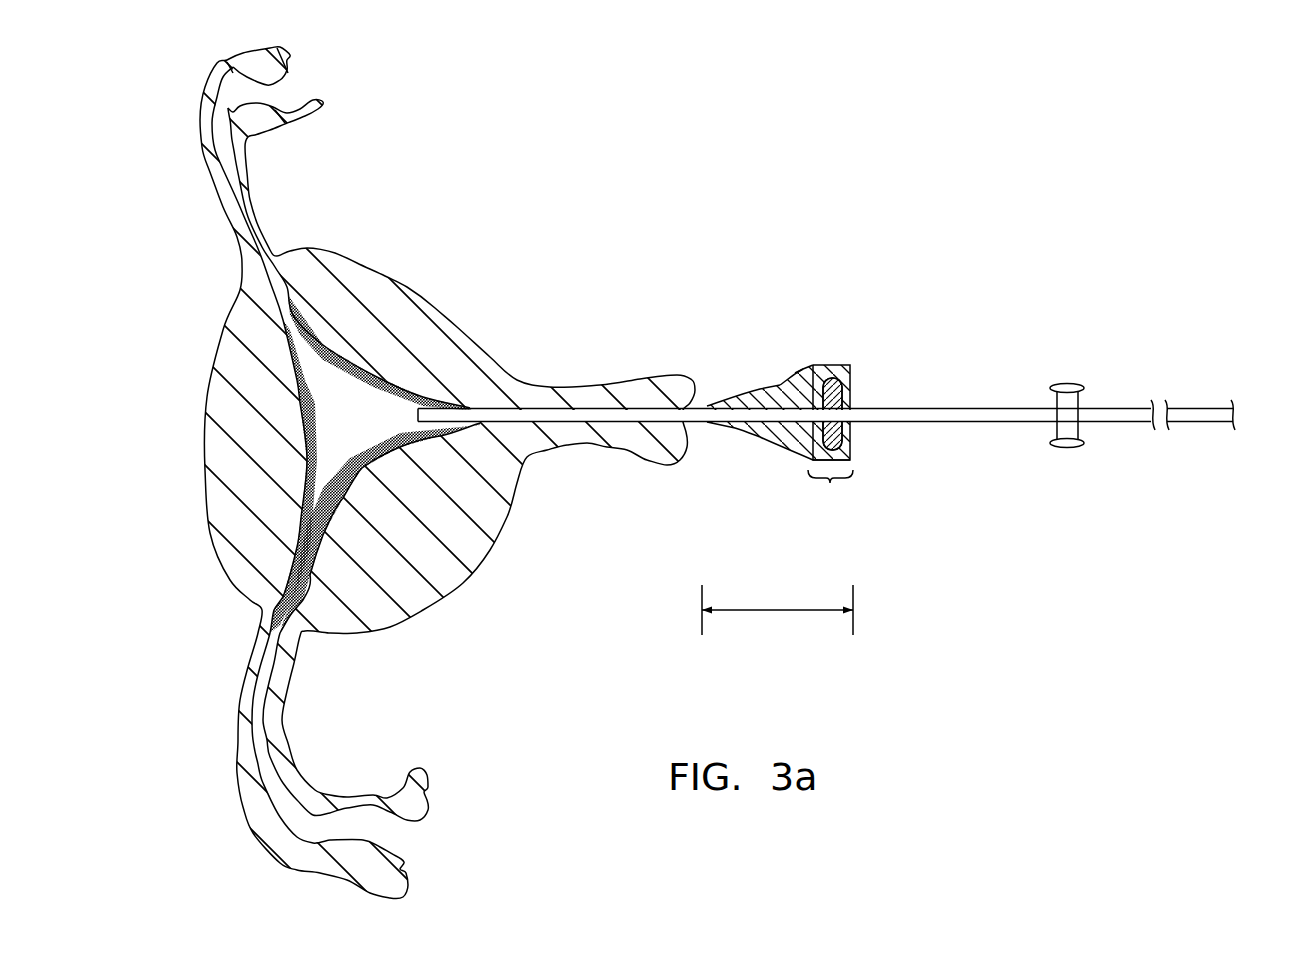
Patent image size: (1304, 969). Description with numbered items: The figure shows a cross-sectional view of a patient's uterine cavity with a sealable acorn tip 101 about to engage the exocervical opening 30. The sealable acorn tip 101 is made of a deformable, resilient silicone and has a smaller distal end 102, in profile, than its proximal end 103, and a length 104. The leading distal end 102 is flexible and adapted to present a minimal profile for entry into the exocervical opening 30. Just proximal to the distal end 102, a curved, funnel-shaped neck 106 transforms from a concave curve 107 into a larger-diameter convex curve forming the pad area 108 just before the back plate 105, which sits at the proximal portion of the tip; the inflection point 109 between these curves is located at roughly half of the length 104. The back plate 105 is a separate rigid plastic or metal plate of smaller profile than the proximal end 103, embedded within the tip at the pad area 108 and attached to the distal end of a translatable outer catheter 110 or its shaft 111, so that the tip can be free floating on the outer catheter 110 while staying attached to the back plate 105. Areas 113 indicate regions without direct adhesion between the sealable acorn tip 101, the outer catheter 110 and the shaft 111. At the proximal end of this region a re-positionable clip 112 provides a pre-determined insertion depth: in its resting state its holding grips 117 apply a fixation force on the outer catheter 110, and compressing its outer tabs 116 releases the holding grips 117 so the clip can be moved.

The exocervical opening 30 is at (703, 440).
The sealable acorn tip 101 is at (835, 430).
The distal end 102 is at (707, 408).
The proximal end 103 is at (852, 376).
The length 104 is at (777, 613).
The back plate 105 is at (844, 398).
The neck 106 is at (757, 436).
The concave curve 107 is at (777, 446).
The pad area 108 is at (800, 465).
The inflection point 109 is at (815, 366).
The outer catheter 110 is at (931, 424).
The shaft 111 is at (652, 406).
The re-positionable clip 112 is at (1073, 437).
The areas without direct adhesion 113 is at (782, 385).
The outer tabs 116 is at (1086, 388).
The holding grips 117 is at (1084, 422).